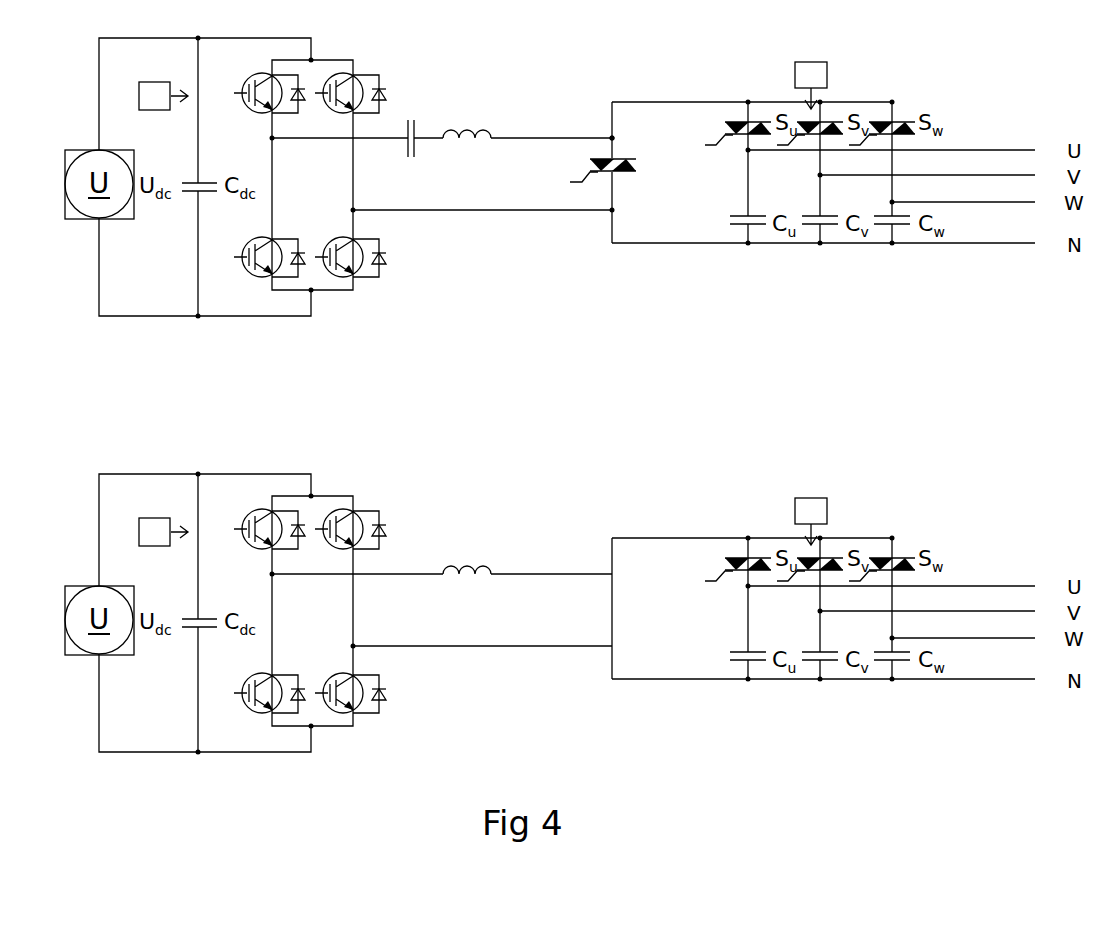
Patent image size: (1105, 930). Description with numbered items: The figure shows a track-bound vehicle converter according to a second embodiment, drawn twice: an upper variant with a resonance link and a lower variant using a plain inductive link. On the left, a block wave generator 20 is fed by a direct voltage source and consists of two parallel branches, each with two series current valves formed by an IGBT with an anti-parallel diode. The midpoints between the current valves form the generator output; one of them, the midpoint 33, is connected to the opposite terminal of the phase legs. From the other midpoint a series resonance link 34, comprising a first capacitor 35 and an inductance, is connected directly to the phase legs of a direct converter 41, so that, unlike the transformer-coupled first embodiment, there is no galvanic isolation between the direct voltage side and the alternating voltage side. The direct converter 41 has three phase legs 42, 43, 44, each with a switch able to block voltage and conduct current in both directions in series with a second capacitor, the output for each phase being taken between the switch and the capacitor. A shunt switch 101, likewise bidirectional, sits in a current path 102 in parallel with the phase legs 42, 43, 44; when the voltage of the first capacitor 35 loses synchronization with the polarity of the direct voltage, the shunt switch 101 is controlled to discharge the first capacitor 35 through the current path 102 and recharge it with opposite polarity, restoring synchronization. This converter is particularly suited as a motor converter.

The block wave generator 20 is at (353, 292).
The midpoint 33 is at (353, 210).
The series resonance link 34 is at (444, 178).
The first capacitor 35 is at (411, 108).
The direct converter 41 is at (803, 244).
The phase leg 42 is at (748, 172).
The phase leg 43 is at (820, 180).
The phase leg 44 is at (892, 168).
The shunt switch 101 is at (617, 173).
The current path 102 is at (612, 149).